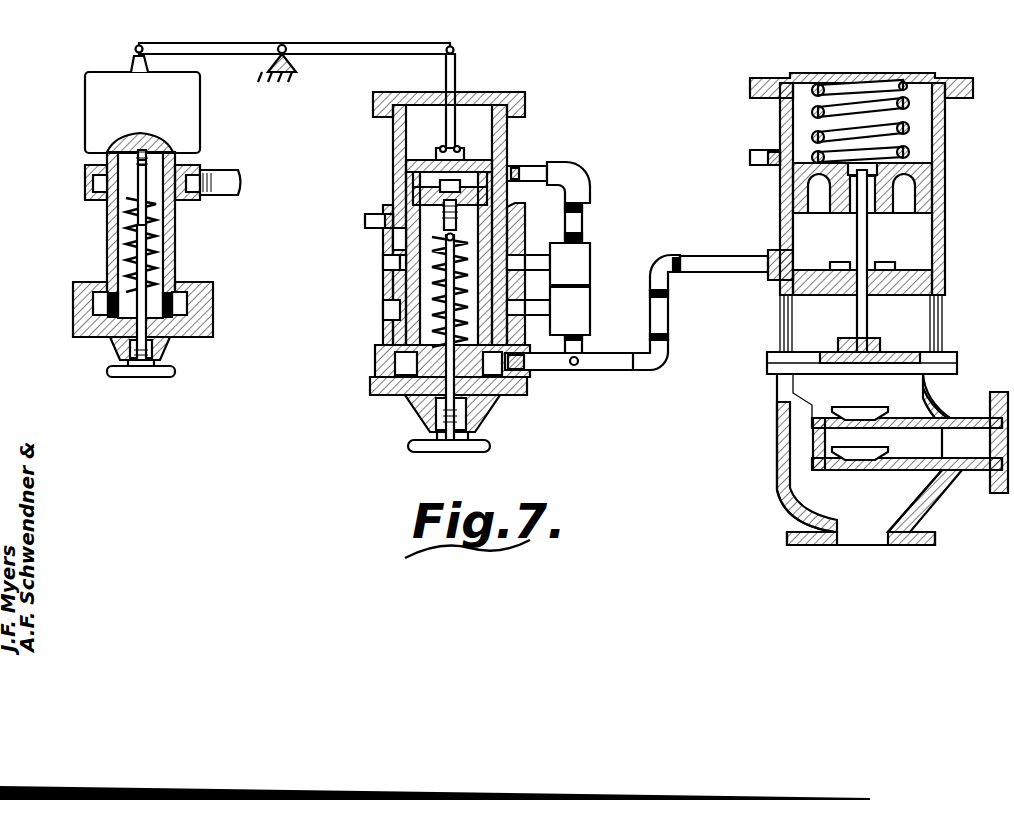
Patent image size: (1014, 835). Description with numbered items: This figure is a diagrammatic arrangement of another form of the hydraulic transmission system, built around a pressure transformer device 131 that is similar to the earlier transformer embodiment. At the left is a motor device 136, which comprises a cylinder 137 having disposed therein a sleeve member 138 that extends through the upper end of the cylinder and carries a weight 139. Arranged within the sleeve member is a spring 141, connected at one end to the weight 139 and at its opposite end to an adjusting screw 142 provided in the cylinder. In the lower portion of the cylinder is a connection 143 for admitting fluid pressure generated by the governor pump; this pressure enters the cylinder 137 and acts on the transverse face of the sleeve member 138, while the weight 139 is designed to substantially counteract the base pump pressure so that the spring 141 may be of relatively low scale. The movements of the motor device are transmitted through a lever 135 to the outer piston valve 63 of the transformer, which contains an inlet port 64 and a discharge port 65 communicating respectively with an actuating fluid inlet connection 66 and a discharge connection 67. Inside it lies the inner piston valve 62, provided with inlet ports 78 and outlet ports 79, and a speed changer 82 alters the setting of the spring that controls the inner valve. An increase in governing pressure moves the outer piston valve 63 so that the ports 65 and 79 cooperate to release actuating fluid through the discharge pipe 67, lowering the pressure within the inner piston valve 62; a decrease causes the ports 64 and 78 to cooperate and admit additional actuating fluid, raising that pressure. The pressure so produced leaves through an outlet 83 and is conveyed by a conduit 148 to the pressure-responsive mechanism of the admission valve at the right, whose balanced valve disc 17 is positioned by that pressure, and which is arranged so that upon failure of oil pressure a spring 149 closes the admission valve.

The balanced valve disc 17 is at (879, 328).
The inner piston valve 62 is at (468, 340).
The outer piston valve 63 is at (505, 245).
The inlet port 64 is at (395, 212).
The discharge port 65 is at (402, 266).
The actuating fluid inlet connection 66 is at (365, 220).
The discharge connection 67 is at (533, 270).
The inlet ports 78 is at (442, 205).
The outlet ports 79 is at (405, 280).
The speed changer 82 is at (414, 438).
The outlet 83 is at (528, 370).
The pressure transformer device 131 is at (482, 272).
The lever 135 is at (350, 52).
The motor device 136 is at (128, 256).
The cylinder 137 is at (182, 250).
The sleeve member 138 is at (172, 283).
The weight 139 is at (180, 97).
The spring 141 is at (158, 215).
The adjusting screw 142 is at (110, 372).
The connection 143 is at (80, 303).
The conduit 148 is at (600, 352).
The spring 149 is at (905, 130).